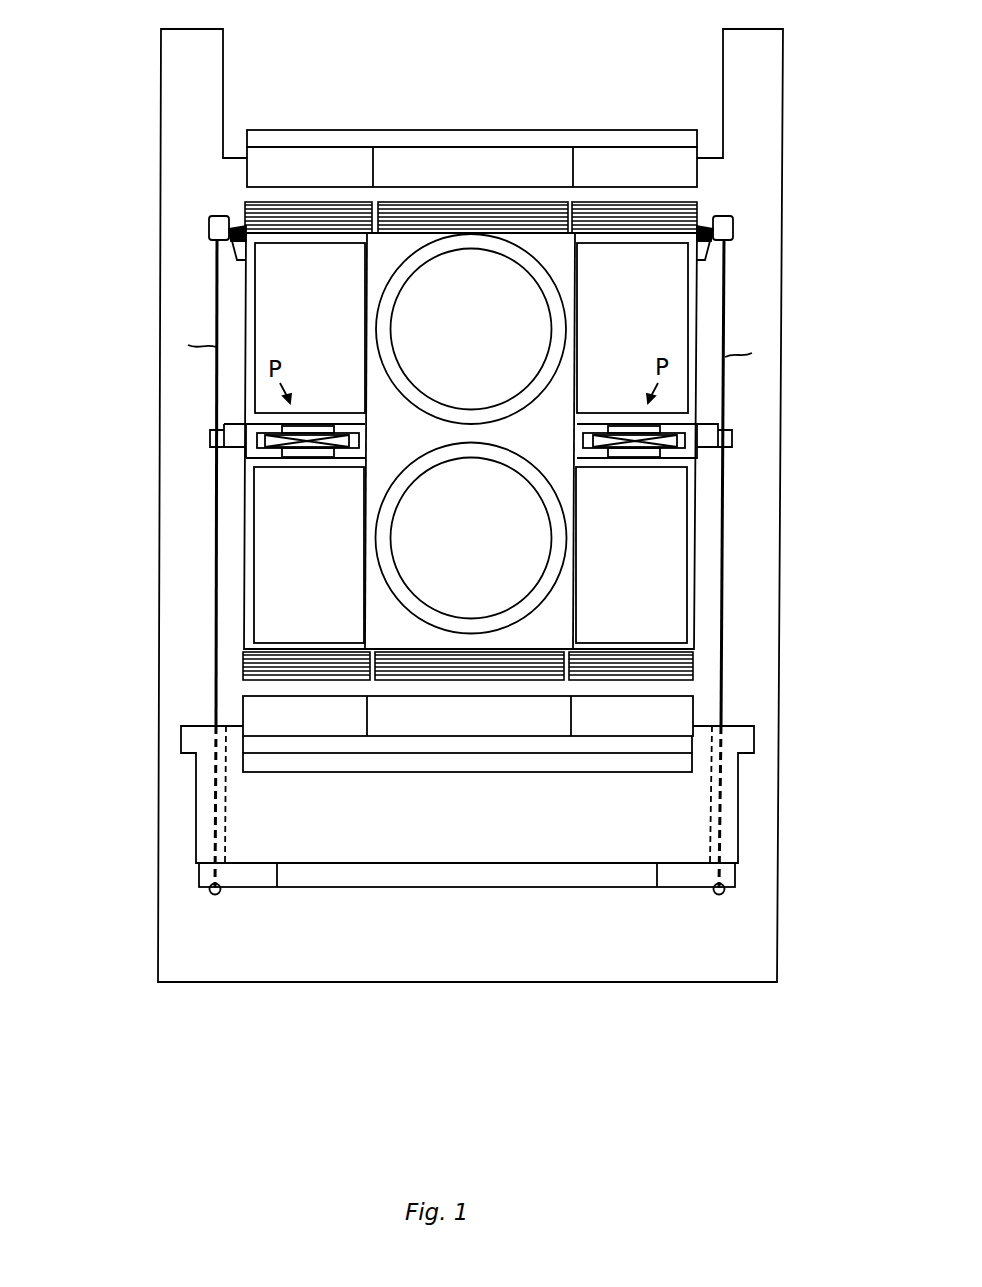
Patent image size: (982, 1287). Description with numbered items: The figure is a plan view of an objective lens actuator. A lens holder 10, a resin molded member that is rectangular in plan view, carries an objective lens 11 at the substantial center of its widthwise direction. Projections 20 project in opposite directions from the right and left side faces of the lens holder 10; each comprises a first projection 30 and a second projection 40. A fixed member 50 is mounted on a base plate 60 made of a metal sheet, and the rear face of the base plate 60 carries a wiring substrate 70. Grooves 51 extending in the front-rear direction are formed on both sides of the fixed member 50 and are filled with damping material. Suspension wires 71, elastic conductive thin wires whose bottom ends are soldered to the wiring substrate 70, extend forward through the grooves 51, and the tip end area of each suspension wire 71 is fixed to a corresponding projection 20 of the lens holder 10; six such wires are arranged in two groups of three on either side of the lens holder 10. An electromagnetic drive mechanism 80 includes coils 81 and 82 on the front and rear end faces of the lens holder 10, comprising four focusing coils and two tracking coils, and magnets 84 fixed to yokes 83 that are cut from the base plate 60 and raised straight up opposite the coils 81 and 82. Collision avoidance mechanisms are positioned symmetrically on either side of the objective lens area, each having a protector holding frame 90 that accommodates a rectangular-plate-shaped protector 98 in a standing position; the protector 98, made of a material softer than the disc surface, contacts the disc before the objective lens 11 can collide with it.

The lens holder 10 is at (698, 302).
The objective lens 11 is at (527, 462).
The projections 20 is at (475, 355).
The first projections 30 is at (209, 225).
The second projections 40 is at (470, 470).
The fixed member 50 is at (500, 867).
The grooves 51 is at (222, 820).
The base plate 60 is at (782, 657).
The wiring substrate 70 is at (595, 888).
The suspension wires 71 is at (213, 595).
The electromagnetic drive mechanism 80 is at (553, 461).
The coils 81 is at (315, 223).
The coils 82 is at (468, 227).
The yokes 83 is at (565, 133).
The magnets 84 is at (472, 155).
The protector holding frame 90 is at (342, 450).
The protector 98 is at (290, 452).